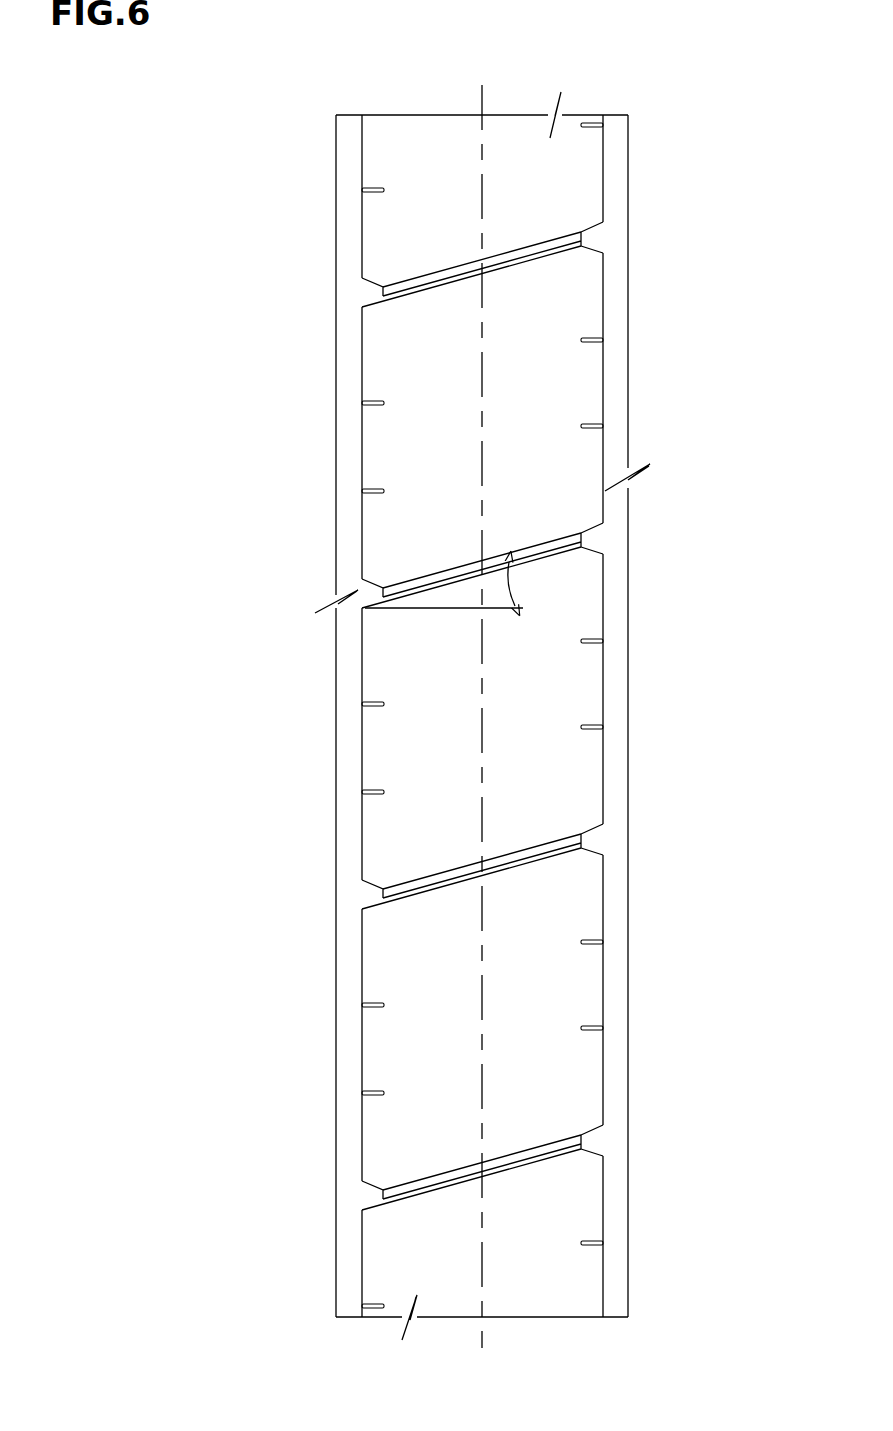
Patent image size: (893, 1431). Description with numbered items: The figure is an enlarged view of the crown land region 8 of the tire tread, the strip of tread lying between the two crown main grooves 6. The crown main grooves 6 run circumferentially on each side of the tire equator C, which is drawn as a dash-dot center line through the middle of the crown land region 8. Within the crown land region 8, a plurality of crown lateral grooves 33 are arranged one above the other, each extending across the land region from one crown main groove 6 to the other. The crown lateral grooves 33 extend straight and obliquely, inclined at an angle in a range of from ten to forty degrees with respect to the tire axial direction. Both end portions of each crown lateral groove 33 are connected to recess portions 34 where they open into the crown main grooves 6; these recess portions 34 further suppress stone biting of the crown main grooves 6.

The crown main grooves 6 is at (348, 148).
The crown land region 8 is at (513, 165).
The tire equator C is at (482, 700).
The crown lateral grooves 33 is at (462, 272).
The recess portions 34 is at (590, 238).